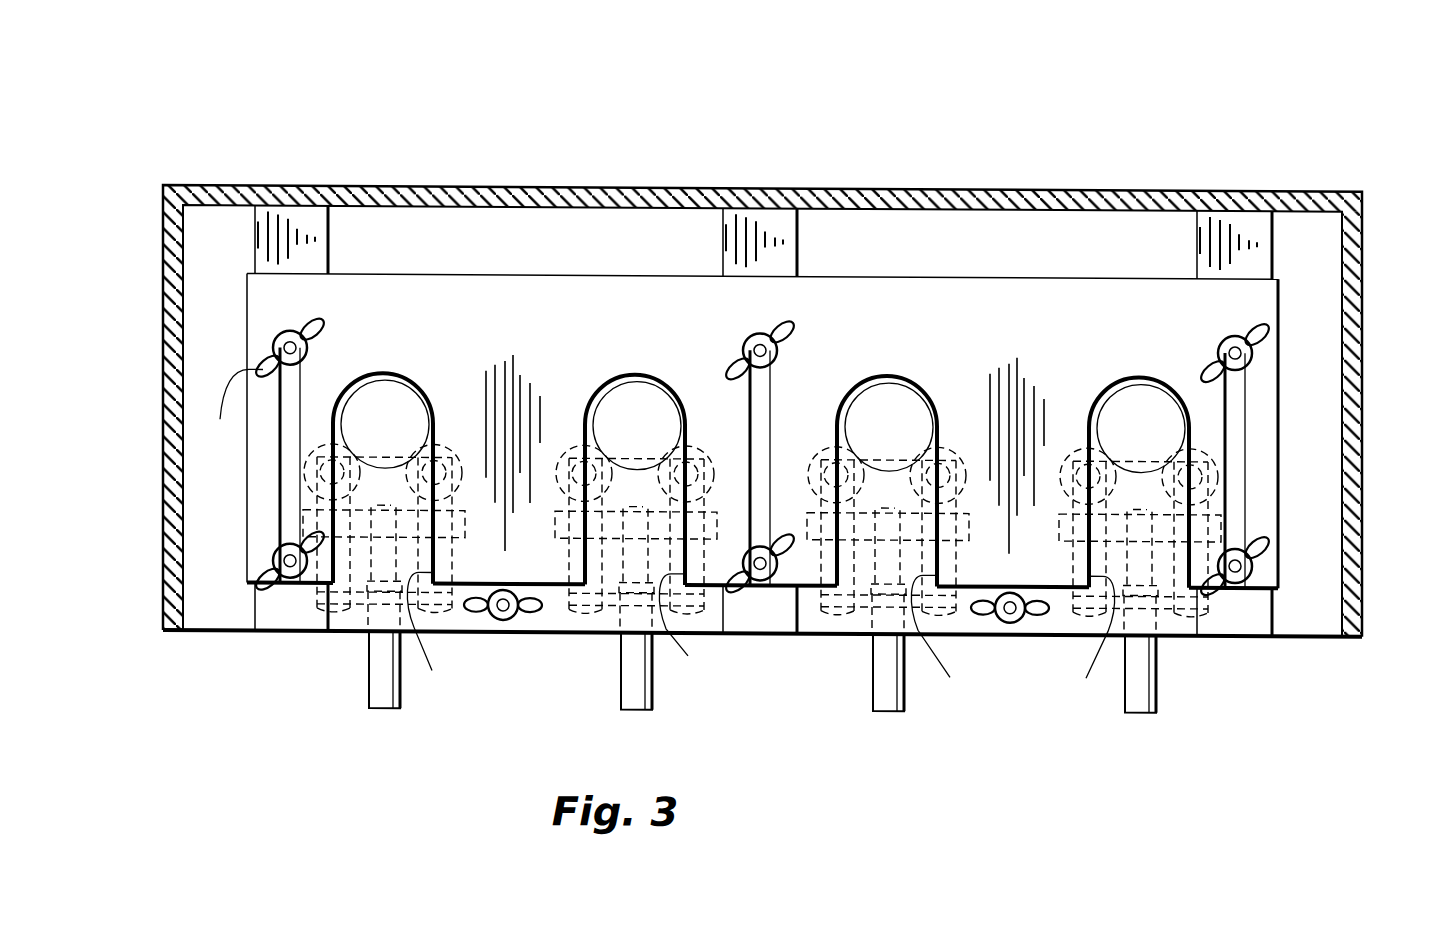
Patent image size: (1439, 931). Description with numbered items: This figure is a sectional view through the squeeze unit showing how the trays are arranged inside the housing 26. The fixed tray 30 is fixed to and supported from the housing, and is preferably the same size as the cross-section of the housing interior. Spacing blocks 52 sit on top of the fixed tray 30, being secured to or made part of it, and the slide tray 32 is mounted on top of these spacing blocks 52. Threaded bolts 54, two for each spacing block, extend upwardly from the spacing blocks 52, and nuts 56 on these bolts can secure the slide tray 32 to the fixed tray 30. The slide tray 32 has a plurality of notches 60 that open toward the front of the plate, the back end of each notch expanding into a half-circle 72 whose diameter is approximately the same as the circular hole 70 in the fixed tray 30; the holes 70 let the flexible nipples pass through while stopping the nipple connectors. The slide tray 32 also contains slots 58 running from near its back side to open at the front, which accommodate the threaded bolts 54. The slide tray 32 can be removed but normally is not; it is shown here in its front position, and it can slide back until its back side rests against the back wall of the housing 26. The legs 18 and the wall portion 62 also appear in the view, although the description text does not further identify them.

The legs 18 is at (387, 693).
The housing 26 is at (526, 160).
The fixed tray 30 is at (412, 247).
The slide tray 32 is at (935, 302).
The spacing blocks 52 is at (268, 222).
The threaded bolts 54 is at (288, 346).
The nuts 56 is at (290, 648).
The slots 58 is at (289, 462).
The notches 60 is at (172, 262).
The arch brackets 62 is at (402, 372).
The circular hole 70 is at (440, 412).
The half-circle 72 is at (380, 375).